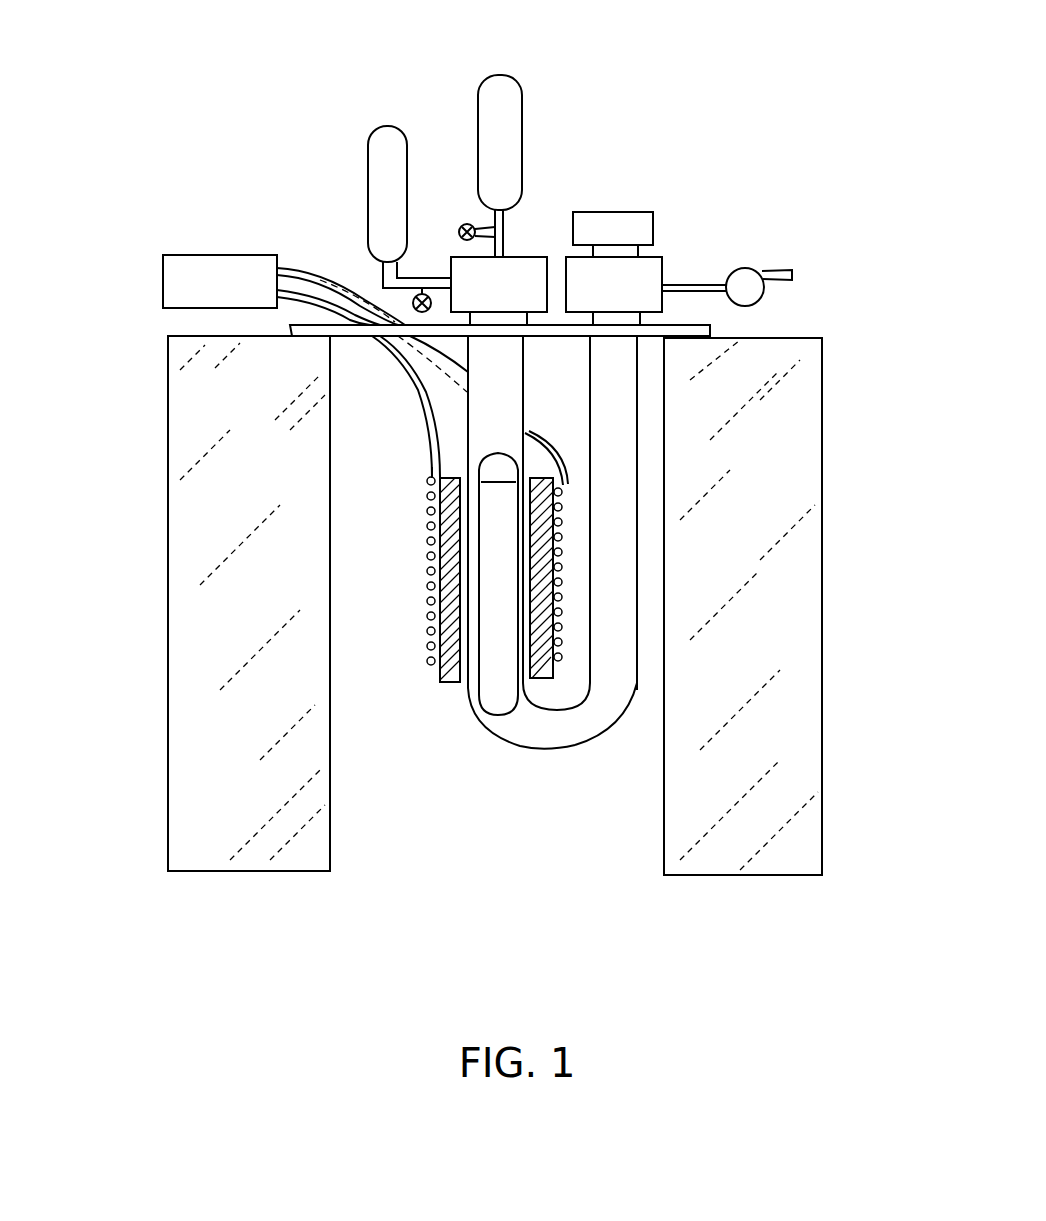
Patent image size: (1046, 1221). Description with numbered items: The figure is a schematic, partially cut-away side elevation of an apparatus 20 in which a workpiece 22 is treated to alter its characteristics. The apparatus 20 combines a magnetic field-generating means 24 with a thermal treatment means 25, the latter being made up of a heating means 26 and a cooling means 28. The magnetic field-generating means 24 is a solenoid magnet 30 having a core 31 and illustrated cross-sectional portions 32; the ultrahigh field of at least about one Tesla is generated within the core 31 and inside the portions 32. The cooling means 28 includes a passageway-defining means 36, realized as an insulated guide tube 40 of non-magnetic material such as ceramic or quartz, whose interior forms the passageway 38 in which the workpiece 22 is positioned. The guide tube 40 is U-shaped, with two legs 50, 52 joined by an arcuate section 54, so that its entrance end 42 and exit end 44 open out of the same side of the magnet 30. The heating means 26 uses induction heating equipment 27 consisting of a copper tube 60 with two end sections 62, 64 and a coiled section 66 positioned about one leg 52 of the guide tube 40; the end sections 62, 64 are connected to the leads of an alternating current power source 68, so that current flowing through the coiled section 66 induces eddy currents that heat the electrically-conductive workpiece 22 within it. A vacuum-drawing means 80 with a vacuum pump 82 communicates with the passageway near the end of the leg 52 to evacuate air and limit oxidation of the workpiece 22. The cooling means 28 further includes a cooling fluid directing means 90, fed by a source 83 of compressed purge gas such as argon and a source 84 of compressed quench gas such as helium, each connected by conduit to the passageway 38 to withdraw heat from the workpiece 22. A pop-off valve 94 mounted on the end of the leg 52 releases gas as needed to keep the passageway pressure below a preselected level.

The apparatus 20 is at (688, 128).
The workpiece 22 is at (505, 665).
The magnetic field-generating means 24 is at (855, 832).
The thermal treatment means 25 is at (457, 908).
The heating means 26 is at (517, 878).
The induction heating equipment 27 is at (430, 615).
The cooling means 28 is at (325, 148).
The solenoid magnet 30 is at (168, 795).
The core 31 is at (327, 847).
The cross-sectional portions 32 is at (170, 845).
The passageway-defining means 36 is at (627, 907).
The passageway 38 is at (600, 735).
The insulated guide tube 40 is at (618, 632).
The entrance end 42 is at (487, 353).
The exit end 44 is at (625, 350).
The leg 50 is at (493, 438).
The leg 52 is at (625, 447).
The arcuate section 54 is at (558, 747).
The copper tube 60 is at (427, 505).
The end section 62 is at (413, 378).
The end section 64 is at (435, 405).
The coiled section 66 is at (427, 568).
The alternating current power source 68 is at (203, 253).
The vacuum-drawing means 80 is at (795, 240).
The vacuum pump 82 is at (743, 267).
The source of compressed purge gas 83 is at (397, 125).
The source of compressed quench gas 84 is at (513, 74).
The cooling fluid directing means 90 is at (550, 140).
The pop-off valve 94 is at (637, 210).